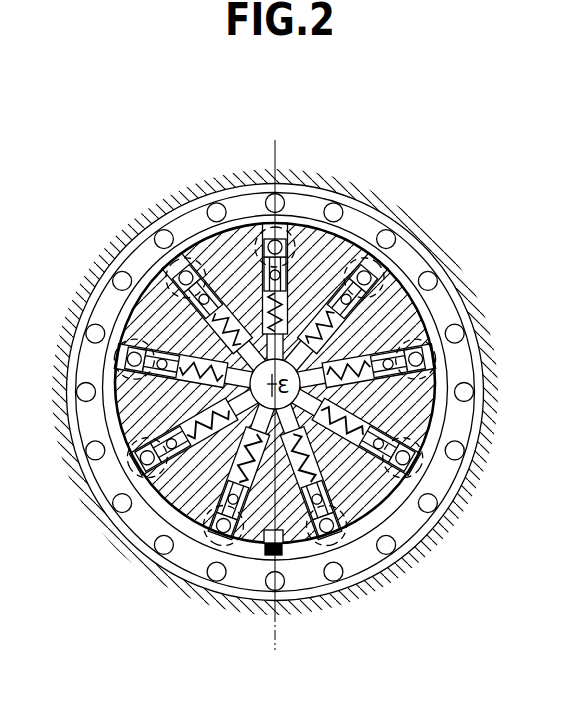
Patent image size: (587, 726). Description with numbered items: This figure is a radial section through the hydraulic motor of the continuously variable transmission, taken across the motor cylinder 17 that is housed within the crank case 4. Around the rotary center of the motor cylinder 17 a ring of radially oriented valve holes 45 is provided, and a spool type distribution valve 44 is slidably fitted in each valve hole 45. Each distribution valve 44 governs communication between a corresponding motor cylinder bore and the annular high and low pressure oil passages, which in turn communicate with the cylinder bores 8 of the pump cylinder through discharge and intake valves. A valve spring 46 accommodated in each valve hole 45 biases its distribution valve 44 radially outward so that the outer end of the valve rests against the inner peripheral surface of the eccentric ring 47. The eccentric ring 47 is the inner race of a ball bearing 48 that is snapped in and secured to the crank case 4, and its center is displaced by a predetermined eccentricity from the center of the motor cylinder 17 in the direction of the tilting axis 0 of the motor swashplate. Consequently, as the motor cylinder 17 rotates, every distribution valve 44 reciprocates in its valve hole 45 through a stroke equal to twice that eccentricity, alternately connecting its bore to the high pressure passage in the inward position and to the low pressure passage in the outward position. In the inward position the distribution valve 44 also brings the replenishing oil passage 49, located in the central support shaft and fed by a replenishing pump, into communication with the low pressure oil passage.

The tilting axis 0 is at (285, 388).
The crank case 4 is at (346, 198).
The cylinder bores 8 is at (423, 387).
The motor cylinder 17 is at (427, 408).
The distribution valves 44 is at (190, 280).
The valve holes 45 is at (168, 270).
The valve springs 46 is at (217, 348).
The eccentric ring 47 is at (423, 303).
The ball bearing 48 is at (415, 240).
The replenishing oil passage 49 is at (188, 422).